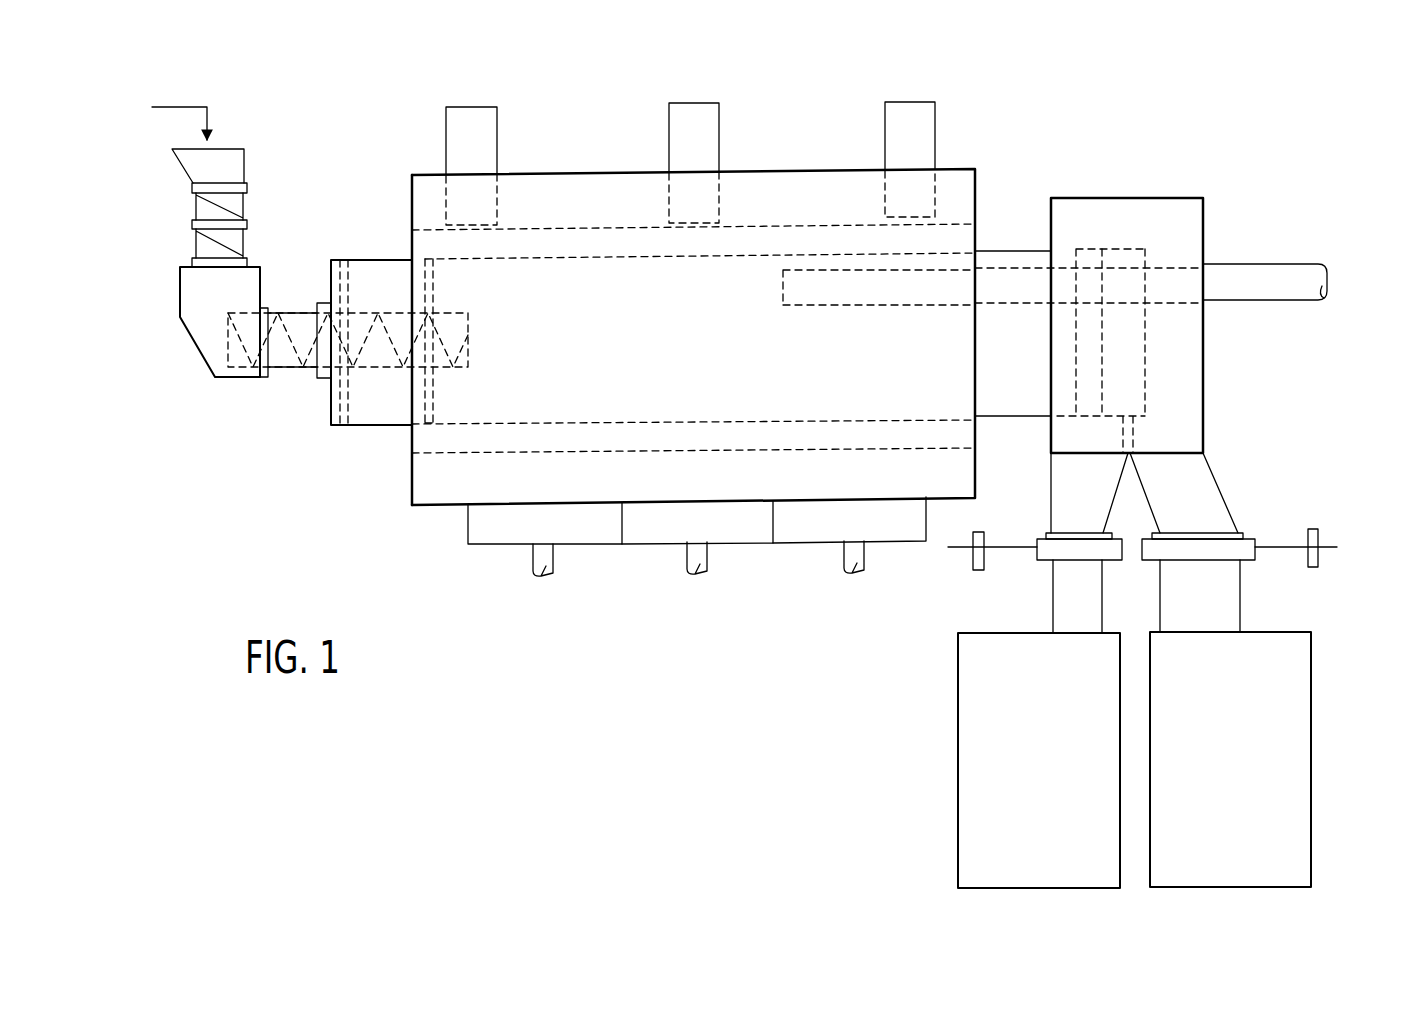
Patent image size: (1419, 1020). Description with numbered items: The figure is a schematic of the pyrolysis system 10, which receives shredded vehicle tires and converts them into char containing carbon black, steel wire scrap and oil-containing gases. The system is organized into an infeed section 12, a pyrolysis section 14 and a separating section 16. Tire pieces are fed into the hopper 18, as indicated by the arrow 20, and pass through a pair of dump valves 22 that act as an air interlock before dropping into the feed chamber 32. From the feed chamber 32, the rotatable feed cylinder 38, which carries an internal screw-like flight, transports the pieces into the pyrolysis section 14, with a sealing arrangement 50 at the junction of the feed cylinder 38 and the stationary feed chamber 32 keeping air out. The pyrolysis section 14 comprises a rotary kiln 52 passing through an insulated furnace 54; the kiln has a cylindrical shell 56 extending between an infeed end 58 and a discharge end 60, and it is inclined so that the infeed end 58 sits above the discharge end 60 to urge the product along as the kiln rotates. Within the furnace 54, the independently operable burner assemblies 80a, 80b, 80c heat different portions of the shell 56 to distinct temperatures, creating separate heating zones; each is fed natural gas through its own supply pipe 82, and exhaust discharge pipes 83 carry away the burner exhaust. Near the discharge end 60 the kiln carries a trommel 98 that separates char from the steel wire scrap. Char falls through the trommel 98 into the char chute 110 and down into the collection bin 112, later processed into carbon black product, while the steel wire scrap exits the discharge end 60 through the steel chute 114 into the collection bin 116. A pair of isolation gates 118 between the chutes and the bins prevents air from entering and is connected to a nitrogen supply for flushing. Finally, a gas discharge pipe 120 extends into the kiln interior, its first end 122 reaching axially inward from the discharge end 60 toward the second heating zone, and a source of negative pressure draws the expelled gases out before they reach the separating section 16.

The pyrolysis system 10 is at (777, 118).
The infeed section 12 is at (277, 253).
The pyrolysis section 14 is at (585, 167).
The separating section 16 is at (1250, 218).
The hopper 18 is at (182, 164).
The arrow 20 is at (190, 106).
The dump valves 22 is at (193, 208).
The feed chamber 32 is at (190, 335).
The feed cylinder 38 is at (287, 368).
The sealing arrangement 50 is at (266, 307).
The rotary kiln 52 is at (365, 252).
The insulated furnace 54 is at (412, 487).
The cylindrical shell 56 is at (503, 423).
The infeed end 58 is at (347, 426).
The discharge end 60 is at (1112, 250).
The burner assembly 80a is at (494, 530).
The burner assembly 80b is at (637, 533).
The burner assembly 80c is at (800, 525).
The supply pipe 82 is at (538, 575).
The exhaust discharge pipes 83 is at (465, 122).
The trommel 98 is at (1090, 366).
The char chute 110 is at (1071, 483).
The collection bin 112 is at (995, 877).
The steel chute 114 is at (1195, 485).
The collection bin 116 is at (1278, 790).
The isolation gates 118 is at (1240, 548).
The gas discharge pipe 120 is at (1290, 278).
The first end 122 is at (783, 290).